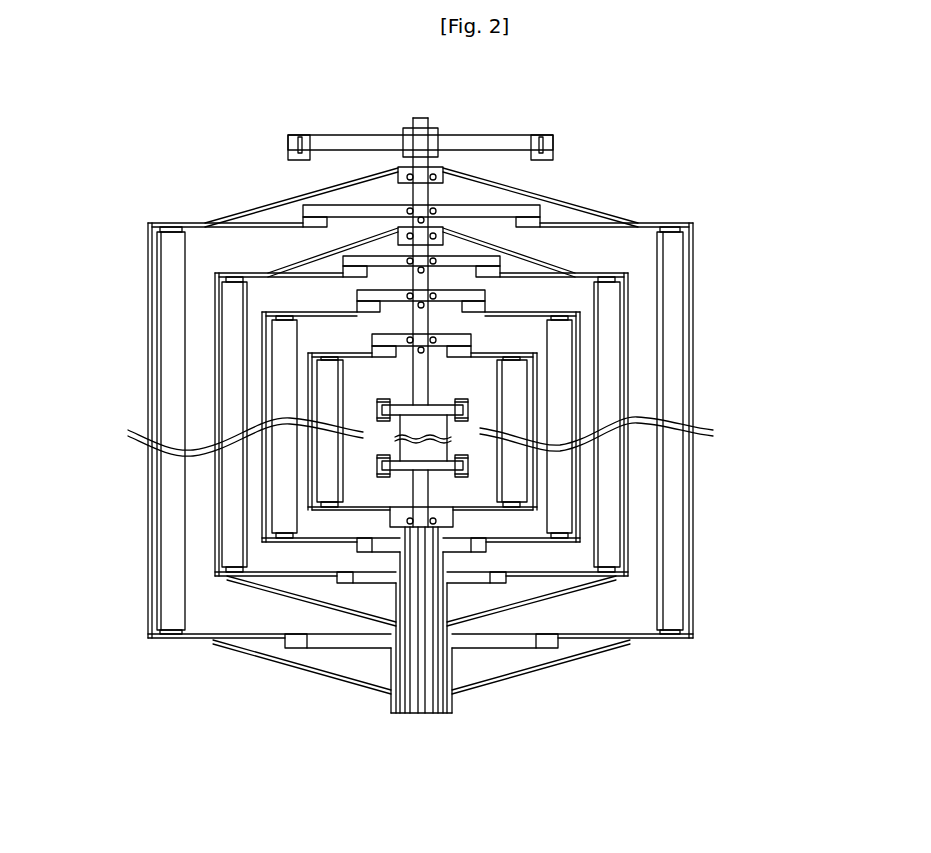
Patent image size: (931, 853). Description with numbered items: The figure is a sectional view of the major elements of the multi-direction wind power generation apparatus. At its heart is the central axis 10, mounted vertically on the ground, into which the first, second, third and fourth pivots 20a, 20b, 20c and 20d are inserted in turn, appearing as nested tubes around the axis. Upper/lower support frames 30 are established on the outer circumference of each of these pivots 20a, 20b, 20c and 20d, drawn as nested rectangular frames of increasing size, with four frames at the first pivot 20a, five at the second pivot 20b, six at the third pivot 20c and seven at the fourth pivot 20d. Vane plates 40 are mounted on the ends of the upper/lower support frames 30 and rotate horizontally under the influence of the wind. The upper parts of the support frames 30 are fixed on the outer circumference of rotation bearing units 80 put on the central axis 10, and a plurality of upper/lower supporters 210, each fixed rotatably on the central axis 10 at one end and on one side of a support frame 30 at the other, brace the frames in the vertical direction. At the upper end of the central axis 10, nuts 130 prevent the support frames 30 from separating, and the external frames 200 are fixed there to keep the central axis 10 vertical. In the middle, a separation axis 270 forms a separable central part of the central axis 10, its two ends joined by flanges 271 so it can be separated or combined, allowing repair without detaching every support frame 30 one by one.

The central axis 10 is at (420, 117).
The external frames 200 is at (357, 143).
The nuts 130 is at (440, 150).
The rotation bearing units 80 is at (467, 340).
The upper/lower supporters 210 is at (310, 257).
The upper/lower support frames 30 is at (693, 256).
The vane plates 40 is at (332, 383).
The separation axis 270 is at (413, 425).
The flanges 271 is at (467, 409).
The first pivot 20a is at (437, 530).
The second pivot 20b is at (440, 565).
The third pivot 20c is at (443, 598).
The fourth pivot 20d is at (452, 698).